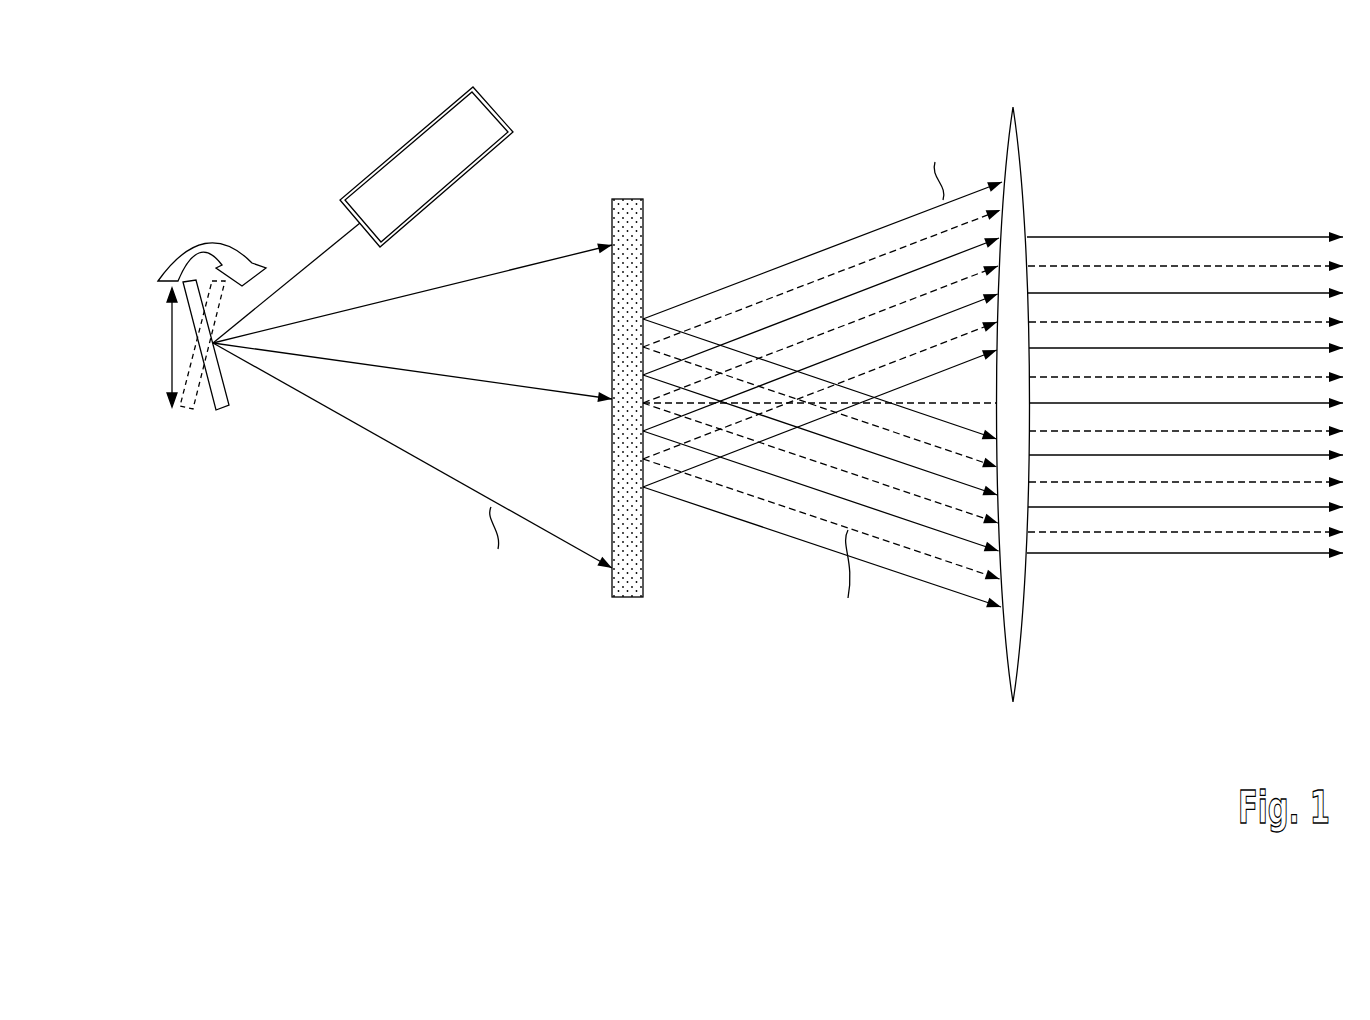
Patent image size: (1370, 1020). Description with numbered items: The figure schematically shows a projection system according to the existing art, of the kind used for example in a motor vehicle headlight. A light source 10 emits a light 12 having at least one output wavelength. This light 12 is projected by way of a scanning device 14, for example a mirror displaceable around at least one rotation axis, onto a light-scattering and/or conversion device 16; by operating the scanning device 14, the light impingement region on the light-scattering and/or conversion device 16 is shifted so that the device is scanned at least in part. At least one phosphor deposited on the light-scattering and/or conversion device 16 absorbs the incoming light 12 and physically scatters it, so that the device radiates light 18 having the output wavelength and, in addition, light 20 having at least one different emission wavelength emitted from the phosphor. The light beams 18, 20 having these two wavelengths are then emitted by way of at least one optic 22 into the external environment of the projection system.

The light source 10 is at (513, 132).
The light 12 is at (325, 250).
The scanning device 14 is at (222, 412).
The light-scattering and/or conversion device 16 is at (623, 600).
The light having the output wavelength λ0 18 is at (913, 472).
The light having the emission wavelength λ1 20 is at (877, 367).
The optic 22 is at (1022, 650).